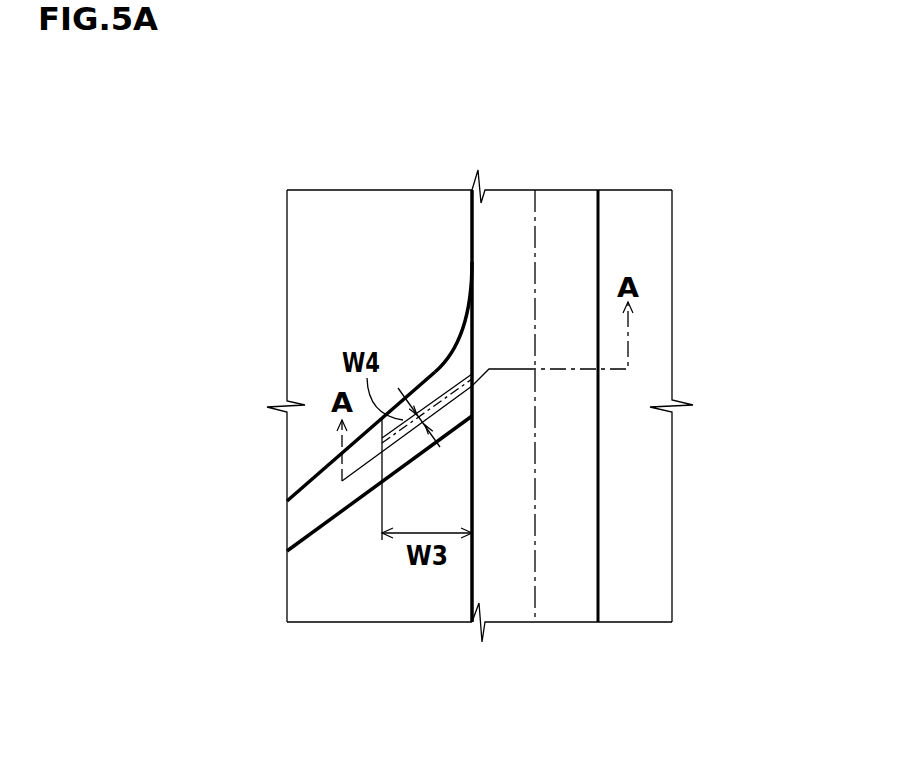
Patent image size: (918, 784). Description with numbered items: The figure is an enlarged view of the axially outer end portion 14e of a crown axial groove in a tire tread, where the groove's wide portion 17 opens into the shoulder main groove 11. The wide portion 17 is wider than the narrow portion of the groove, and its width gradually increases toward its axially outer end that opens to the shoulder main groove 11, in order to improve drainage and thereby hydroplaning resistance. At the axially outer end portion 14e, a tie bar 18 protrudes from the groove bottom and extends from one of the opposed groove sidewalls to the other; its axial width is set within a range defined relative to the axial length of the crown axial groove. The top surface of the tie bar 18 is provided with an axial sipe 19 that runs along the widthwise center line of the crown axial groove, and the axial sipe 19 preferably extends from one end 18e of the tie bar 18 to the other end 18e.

The shoulder main groove 11 is at (573, 208).
The wide portion 17 is at (353, 505).
The tie bar 18 is at (452, 373).
The axially outer end portion 14e is at (475, 413).
The axial sipe 19 is at (418, 414).
The end of the tie bar 18e is at (473, 403).